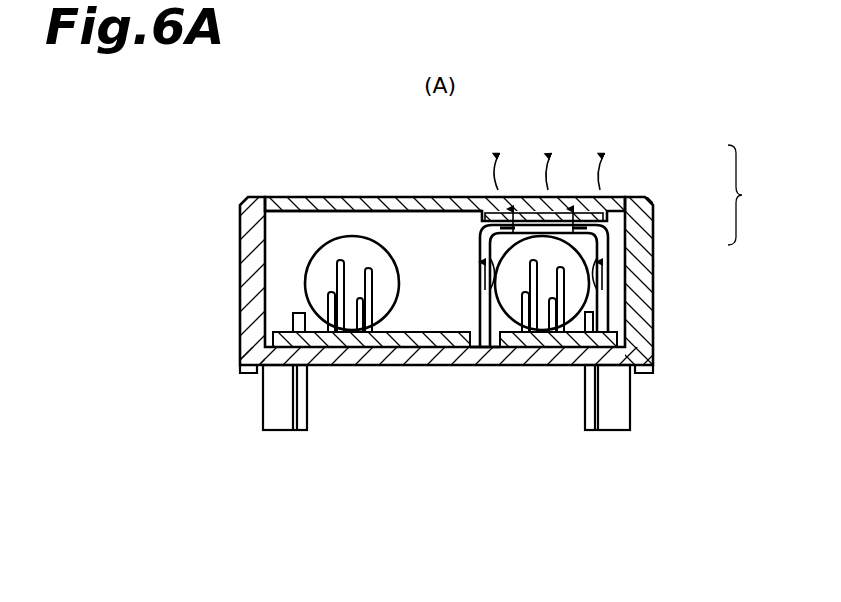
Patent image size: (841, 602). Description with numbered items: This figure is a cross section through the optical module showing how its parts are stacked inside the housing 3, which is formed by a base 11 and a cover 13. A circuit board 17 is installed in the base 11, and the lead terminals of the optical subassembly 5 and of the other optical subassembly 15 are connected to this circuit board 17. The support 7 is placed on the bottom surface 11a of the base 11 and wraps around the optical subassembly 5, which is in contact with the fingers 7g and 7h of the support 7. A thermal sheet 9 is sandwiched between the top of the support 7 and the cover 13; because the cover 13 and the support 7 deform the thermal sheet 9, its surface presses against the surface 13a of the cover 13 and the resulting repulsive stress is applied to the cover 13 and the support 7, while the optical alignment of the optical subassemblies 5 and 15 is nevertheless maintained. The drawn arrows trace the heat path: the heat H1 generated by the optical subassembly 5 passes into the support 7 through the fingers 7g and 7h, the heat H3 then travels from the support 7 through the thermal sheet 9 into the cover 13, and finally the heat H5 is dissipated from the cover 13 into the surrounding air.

The housing 3 is at (748, 195).
The optical subassembly 5 is at (573, 303).
The support 7 is at (528, 222).
The finger 7g is at (488, 271).
The finger 7h is at (598, 272).
The thermal sheet 9 is at (594, 217).
The base 11 is at (643, 240).
The bottom surface 11a is at (484, 350).
The cover 13 is at (620, 197).
The surface of the cover 13a is at (418, 219).
The optical subassembly 15 is at (380, 300).
The circuit board 17 is at (444, 350).
The heat H1 is at (486, 280).
The heat H3 is at (500, 228).
The heat H5 is at (603, 162).